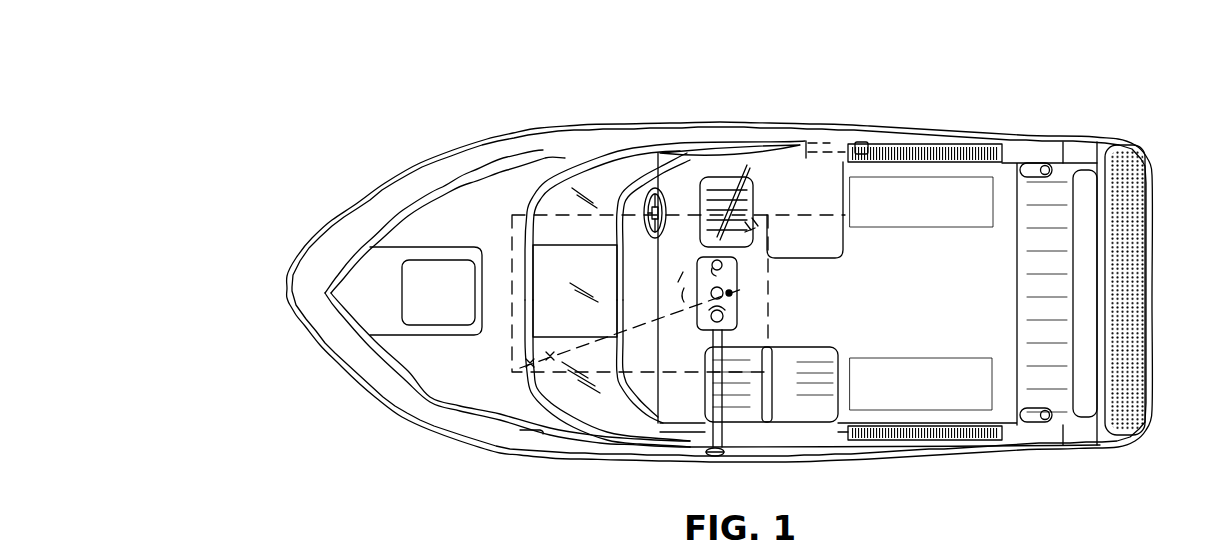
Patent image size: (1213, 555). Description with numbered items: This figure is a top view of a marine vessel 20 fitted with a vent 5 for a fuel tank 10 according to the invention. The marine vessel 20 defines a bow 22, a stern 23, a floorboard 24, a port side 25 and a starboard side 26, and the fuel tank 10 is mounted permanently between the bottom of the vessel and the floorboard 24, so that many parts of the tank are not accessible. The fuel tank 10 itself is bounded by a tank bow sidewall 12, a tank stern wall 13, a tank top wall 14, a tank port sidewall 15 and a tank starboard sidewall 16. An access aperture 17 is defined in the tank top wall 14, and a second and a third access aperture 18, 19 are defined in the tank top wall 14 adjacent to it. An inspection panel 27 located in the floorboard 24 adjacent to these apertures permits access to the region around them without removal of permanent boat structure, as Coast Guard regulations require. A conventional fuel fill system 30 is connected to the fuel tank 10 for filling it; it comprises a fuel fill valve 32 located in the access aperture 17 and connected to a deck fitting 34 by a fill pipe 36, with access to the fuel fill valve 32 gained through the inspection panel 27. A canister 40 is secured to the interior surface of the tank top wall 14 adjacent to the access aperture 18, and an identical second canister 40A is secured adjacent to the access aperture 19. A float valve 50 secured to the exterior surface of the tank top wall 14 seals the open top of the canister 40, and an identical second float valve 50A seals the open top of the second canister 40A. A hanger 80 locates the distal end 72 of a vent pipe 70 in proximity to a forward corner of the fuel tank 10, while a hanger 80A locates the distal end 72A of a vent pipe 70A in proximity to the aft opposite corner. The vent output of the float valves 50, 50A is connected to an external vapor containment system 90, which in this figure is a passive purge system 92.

The vent 5 is at (848, 108).
The fuel tank 10 is at (570, 215).
The tank bow sidewall 12 is at (512, 348).
The tank stern wall 13 is at (745, 332).
The tank top wall 14 is at (650, 367).
The tank port sidewall 15 is at (512, 376).
The tank starboard sidewall 16 is at (637, 213).
The access aperture 17 is at (765, 425).
The second access aperture 18 is at (740, 288).
The third access aperture 19 is at (717, 262).
The marine vessel 20 is at (380, 180).
The bow 22 is at (287, 290).
The stern 23 is at (1107, 313).
The floorboard 24 is at (887, 350).
The port side 25 is at (527, 452).
The starboard side 26 is at (597, 122).
The inspection panel 27 is at (735, 293).
The fuel fill system 30 is at (658, 471).
The fuel fill valve 32 is at (712, 340).
The deck fitting 34 is at (722, 457).
The fill pipe 36 is at (713, 413).
The canister 40 is at (725, 325).
The second canister 40A is at (720, 290).
The float valve 50 is at (700, 345).
The second float valve 50A is at (712, 258).
The vent pipe 70 is at (610, 330).
The vent pipe 70A is at (720, 262).
The distal end 72 is at (527, 366).
The distal end 72A is at (757, 230).
The hanger 80 is at (550, 357).
The hanger 80A is at (758, 232).
The external vapor containment system 90 is at (833, 145).
The passive purge system 92 is at (868, 153).